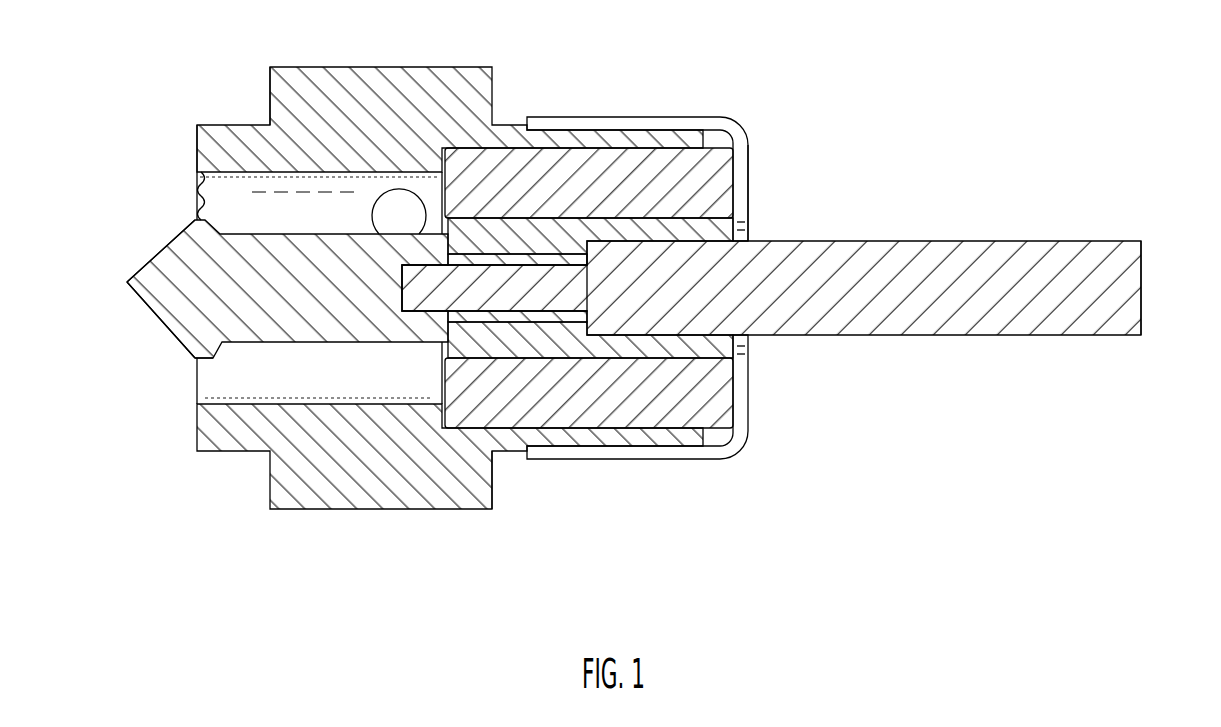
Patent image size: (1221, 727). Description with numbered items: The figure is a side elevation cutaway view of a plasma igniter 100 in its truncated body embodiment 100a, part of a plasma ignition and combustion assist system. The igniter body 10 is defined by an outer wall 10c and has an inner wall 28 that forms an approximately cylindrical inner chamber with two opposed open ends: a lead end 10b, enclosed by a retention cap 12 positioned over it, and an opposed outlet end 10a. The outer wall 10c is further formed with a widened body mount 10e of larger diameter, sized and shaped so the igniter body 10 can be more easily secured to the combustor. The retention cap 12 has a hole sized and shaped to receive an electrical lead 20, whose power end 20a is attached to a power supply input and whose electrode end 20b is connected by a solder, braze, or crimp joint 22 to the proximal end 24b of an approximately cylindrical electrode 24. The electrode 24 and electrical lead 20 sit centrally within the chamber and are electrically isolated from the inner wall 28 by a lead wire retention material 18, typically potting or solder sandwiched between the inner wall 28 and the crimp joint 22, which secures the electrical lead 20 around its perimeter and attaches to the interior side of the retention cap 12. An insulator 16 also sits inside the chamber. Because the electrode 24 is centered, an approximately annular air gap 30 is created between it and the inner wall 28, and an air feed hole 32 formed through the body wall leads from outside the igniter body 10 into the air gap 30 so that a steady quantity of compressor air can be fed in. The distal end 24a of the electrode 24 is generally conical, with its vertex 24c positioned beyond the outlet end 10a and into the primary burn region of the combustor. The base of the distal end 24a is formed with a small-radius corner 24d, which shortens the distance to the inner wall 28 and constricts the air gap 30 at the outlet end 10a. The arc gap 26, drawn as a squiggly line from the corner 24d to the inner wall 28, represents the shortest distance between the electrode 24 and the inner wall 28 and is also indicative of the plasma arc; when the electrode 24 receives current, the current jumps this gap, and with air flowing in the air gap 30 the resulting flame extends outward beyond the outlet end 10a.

The igniter body 10 is at (192, 432).
The outlet end 10a is at (157, 106).
The lead end 10b is at (781, 201).
The outer wall 10c is at (232, 125).
The widened body mount 10e is at (490, 511).
The retention cap 12 is at (743, 148).
The insulator 16 is at (723, 401).
The retention material 18 is at (723, 345).
The electrical lead 20 is at (897, 247).
The power end 20a is at (1142, 290).
The electrode end 20b is at (402, 288).
The crimp joint 22 is at (560, 316).
The electrode 24 is at (297, 330).
The distal end 24a is at (120, 236).
The proximal end 24b is at (588, 232).
The vertex 24c is at (126, 283).
The corner 24d is at (193, 358).
The arc gap 26 is at (199, 200).
The inner wall 28 is at (344, 181).
The air gap 30 is at (383, 343).
The air feed hole 32 is at (410, 210).
The plasma igniter 100 is at (826, 634).
The truncated body igniter 100a is at (668, 582).